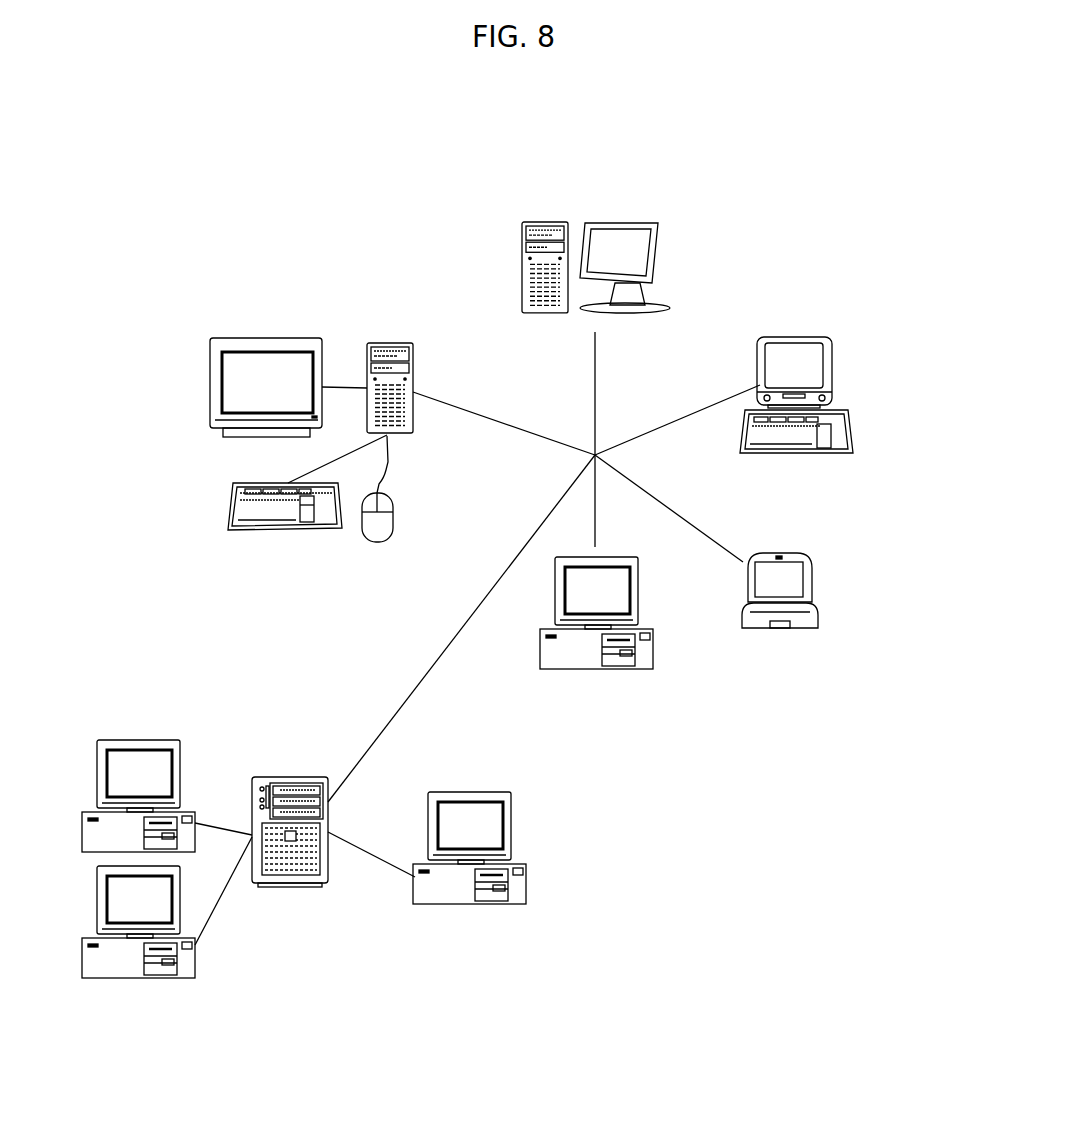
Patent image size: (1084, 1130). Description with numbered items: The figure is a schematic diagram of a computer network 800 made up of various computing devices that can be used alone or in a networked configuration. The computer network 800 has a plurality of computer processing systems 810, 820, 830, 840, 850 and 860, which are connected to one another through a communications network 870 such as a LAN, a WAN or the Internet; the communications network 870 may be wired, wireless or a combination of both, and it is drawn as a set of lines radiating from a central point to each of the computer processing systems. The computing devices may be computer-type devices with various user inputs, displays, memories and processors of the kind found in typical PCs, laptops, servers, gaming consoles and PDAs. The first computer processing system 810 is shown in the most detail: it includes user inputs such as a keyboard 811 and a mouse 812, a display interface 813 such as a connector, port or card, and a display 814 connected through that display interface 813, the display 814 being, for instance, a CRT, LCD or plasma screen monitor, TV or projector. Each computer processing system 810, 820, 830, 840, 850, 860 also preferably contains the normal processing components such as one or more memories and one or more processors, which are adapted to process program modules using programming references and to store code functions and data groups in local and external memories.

The computer network 800 is at (913, 176).
The computer processing system 810 is at (312, 407).
The keyboard 811 is at (227, 503).
The mouse 812 is at (400, 503).
The display interface 813 is at (367, 383).
The display 814 is at (215, 360).
The computer processing system 820 is at (596, 239).
The computer processing system 830 is at (827, 395).
The computer processing system 840 is at (809, 590).
The computer processing system 850 is at (596, 639).
The computer processing system 860 is at (304, 832).
The communications network 870 is at (544, 567).